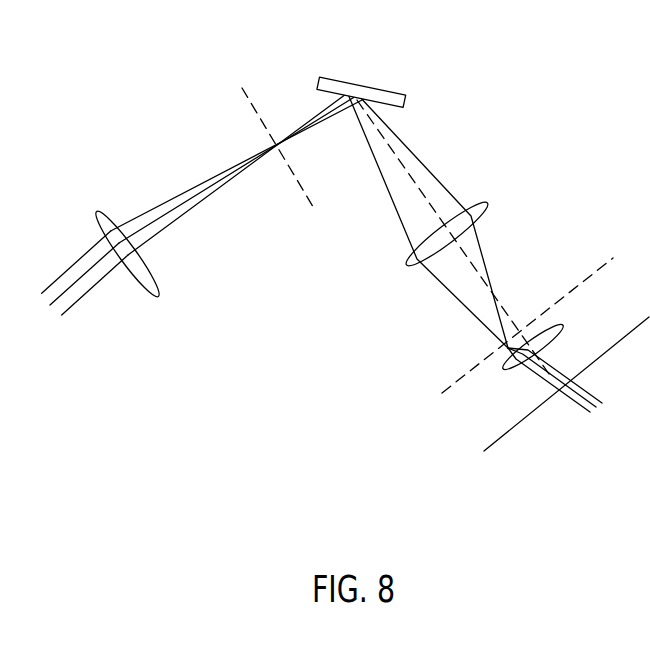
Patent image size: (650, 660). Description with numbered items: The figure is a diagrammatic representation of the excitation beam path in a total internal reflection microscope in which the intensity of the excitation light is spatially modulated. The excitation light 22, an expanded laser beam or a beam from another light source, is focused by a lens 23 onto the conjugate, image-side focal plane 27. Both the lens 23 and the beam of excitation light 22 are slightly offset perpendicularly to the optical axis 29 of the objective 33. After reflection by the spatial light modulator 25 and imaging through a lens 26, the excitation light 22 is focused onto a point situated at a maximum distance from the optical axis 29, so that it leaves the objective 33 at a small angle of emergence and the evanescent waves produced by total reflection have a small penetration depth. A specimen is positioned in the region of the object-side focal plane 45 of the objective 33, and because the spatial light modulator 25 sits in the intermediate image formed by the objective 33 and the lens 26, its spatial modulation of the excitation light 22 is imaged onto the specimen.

The excitation light 22 is at (68, 273).
The lens 23 is at (111, 215).
The spatial light modulator 25 is at (372, 92).
The lens 26 is at (477, 207).
The conjugate, image-side focal plane 27 is at (308, 200).
The optical axis 29 is at (507, 312).
The objective 33 is at (561, 324).
The object-side focal plane 45 is at (507, 434).